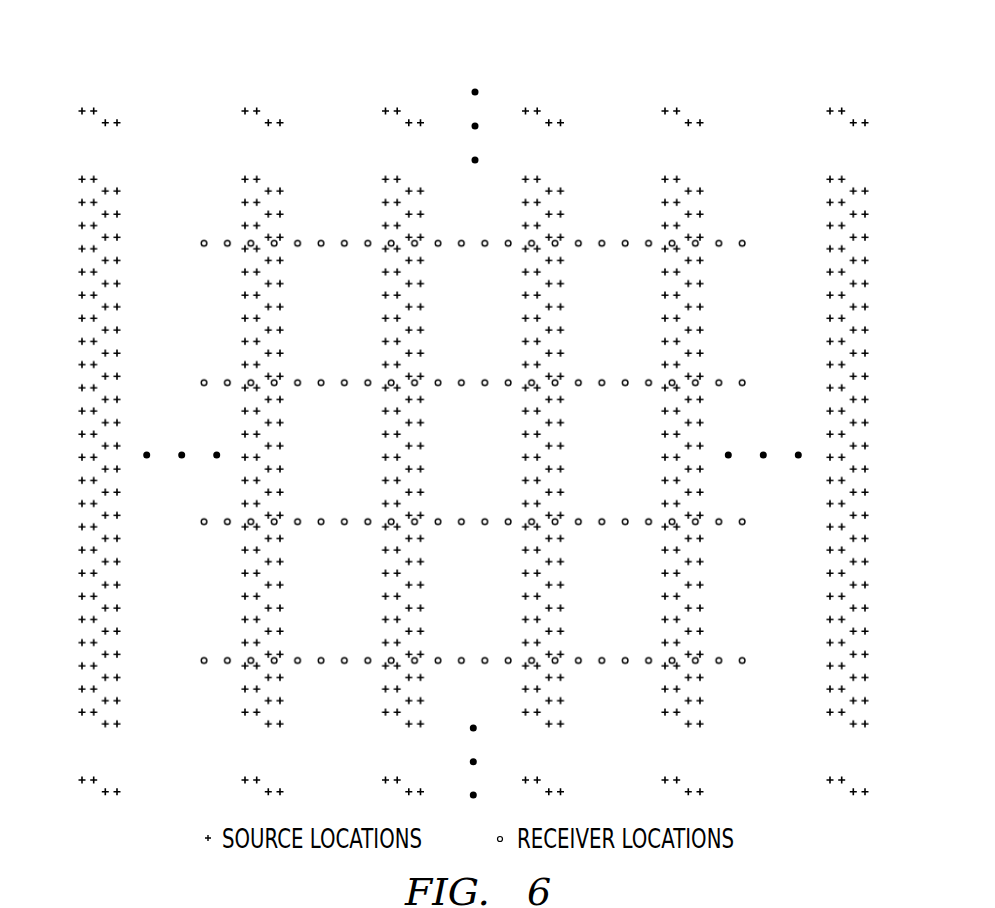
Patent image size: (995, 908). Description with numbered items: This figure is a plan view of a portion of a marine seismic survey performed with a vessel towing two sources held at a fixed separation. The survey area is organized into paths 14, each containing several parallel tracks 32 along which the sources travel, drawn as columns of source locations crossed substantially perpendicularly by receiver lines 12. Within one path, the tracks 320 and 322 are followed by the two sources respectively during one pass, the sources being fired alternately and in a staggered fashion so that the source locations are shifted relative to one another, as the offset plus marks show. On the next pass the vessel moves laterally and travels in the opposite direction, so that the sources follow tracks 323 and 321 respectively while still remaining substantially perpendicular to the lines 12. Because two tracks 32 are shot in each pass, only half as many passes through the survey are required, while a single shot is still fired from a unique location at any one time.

The path 14 is at (450, 461).
The lines 12 is at (748, 243).
The tracks 32 is at (108, 488).
The track 320 is at (78, 782).
The track 321 is at (95, 176).
The track 322 is at (103, 797).
The track 323 is at (122, 189).